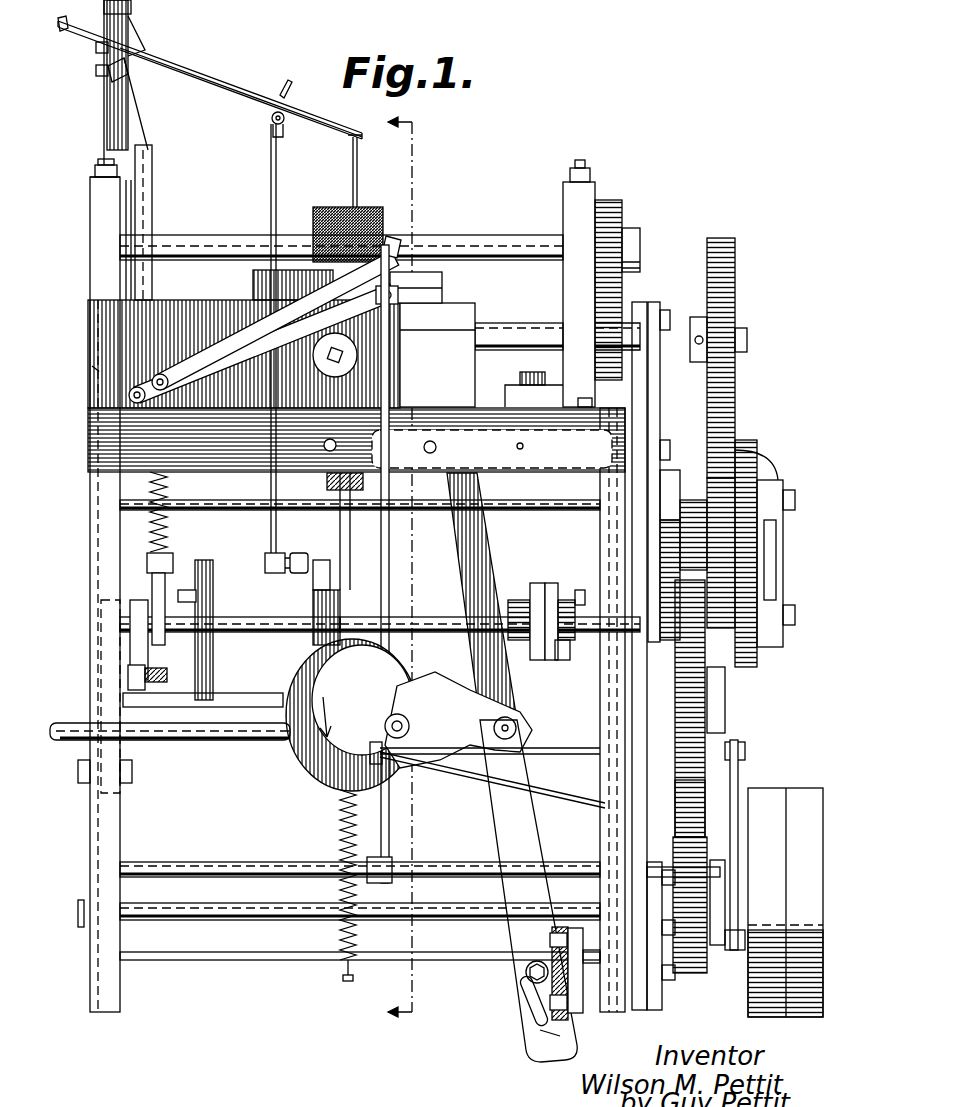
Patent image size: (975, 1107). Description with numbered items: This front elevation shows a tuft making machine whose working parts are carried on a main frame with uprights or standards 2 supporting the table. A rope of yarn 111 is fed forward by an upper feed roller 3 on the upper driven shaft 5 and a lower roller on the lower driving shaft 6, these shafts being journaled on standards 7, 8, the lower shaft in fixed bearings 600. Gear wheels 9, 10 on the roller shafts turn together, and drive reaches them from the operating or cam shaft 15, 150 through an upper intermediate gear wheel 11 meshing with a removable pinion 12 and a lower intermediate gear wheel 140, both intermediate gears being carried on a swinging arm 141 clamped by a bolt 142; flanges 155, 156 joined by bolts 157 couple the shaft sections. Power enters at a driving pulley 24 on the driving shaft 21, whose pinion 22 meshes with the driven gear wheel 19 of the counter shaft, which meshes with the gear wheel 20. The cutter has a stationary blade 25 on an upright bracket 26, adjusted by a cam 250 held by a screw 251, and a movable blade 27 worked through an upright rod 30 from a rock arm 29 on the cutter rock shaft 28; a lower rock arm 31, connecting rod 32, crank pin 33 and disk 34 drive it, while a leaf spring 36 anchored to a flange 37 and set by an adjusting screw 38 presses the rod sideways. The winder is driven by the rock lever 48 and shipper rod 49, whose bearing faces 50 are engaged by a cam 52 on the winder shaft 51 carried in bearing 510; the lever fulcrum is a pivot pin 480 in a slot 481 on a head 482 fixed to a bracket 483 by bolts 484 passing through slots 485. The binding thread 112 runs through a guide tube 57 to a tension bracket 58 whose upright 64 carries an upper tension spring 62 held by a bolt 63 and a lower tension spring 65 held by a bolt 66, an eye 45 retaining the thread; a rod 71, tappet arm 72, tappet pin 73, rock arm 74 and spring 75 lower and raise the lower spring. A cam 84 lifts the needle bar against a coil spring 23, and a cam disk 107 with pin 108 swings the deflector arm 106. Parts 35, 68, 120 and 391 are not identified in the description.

The upright or standard 2 is at (376, 594).
The upper feed roller 3 is at (322, 206).
The upper driven shaft 5 is at (481, 246).
The lower driving shaft 6 is at (506, 337).
The standard 7 is at (105, 195).
The standard 8 is at (579, 283).
The gear wheel 9 is at (612, 203).
The gear wheel 10 is at (398, 685).
The upper intermediate gear wheel 11 is at (750, 454).
The driven pinion 12 is at (737, 243).
The operating or cam shaft 15 is at (590, 633).
The driven gear wheel 19 is at (676, 814).
The gear wheel 20 is at (692, 706).
The driving shaft 21 is at (210, 921).
The pinion 22 is at (684, 974).
The coil spring 23 is at (340, 930).
The driving pulley 24 is at (785, 902).
The lower stationary cutting blade 25 is at (236, 352).
The upright bracket 26 is at (90, 316).
The upper movable cutting blade 27 is at (228, 338).
The cutter rock shaft 28 is at (165, 868).
The upper rock arm 29 is at (392, 884).
The upright rod 30 is at (395, 540).
The lower rock arm 31 is at (720, 892).
The connecting rod 32 is at (740, 774).
The crank pin 33 is at (758, 750).
The disk 34 is at (725, 730).
The block 35 is at (400, 278).
The leaf spring 36 is at (512, 470).
The depending flange 37 is at (90, 444).
The adjusting screw 38 is at (431, 462).
The eye 45 is at (277, 99).
The upright rock lever 48 is at (462, 566).
The shipper rod 49 is at (200, 742).
The upright bearing face 50 is at (295, 768).
The horizontal longitudinal shaft 51 is at (410, 708).
The cam 52 is at (362, 700).
The stationary guide tube 57 is at (152, 185).
The tension bracket 58 is at (105, 82).
The upper tension spring 62 is at (192, 70).
The bolt 63 is at (96, 48).
The upright 64 is at (132, 300).
The lower flat tension spring 65 is at (220, 93).
The bolt 66 is at (96, 71).
The lever end 68 is at (72, 16).
The upright rod 71 is at (270, 526).
The tappet arm 72 is at (130, 640).
The tappet pin or cam 73 is at (140, 668).
The rock arm 74 is at (156, 585).
The spring 75 is at (155, 530).
The rotary cam 84 is at (313, 640).
The lower rock arm 106 is at (195, 524).
The cam disk 107 is at (213, 670).
The cam pin 108 is at (196, 596).
The yarn rope 111 is at (392, 304).
The binding thread 112 is at (151, 128).
The rod 120 is at (346, 556).
The lower intermediate gear wheel 140 is at (770, 568).
The vertically swinging arm 141 is at (655, 582).
The bolt 142 is at (660, 552).
The rear shaft section 150 is at (278, 617).
The flange 155 is at (548, 583).
The flange 156 is at (533, 583).
The bolts 157 is at (560, 660).
The vertically swinging cam 250 is at (320, 374).
The screw 251 is at (360, 368).
The cap 391 is at (131, 8).
The pivot pin 480 is at (526, 972).
The longitudinal slot 481 is at (546, 1032).
The head 482 is at (536, 982).
The bracket 483 is at (584, 1016).
The bolts 484 is at (550, 940).
The vertical slots 485 is at (557, 914).
The bearing 510 is at (385, 722).
The bearings 600 is at (92, 372).